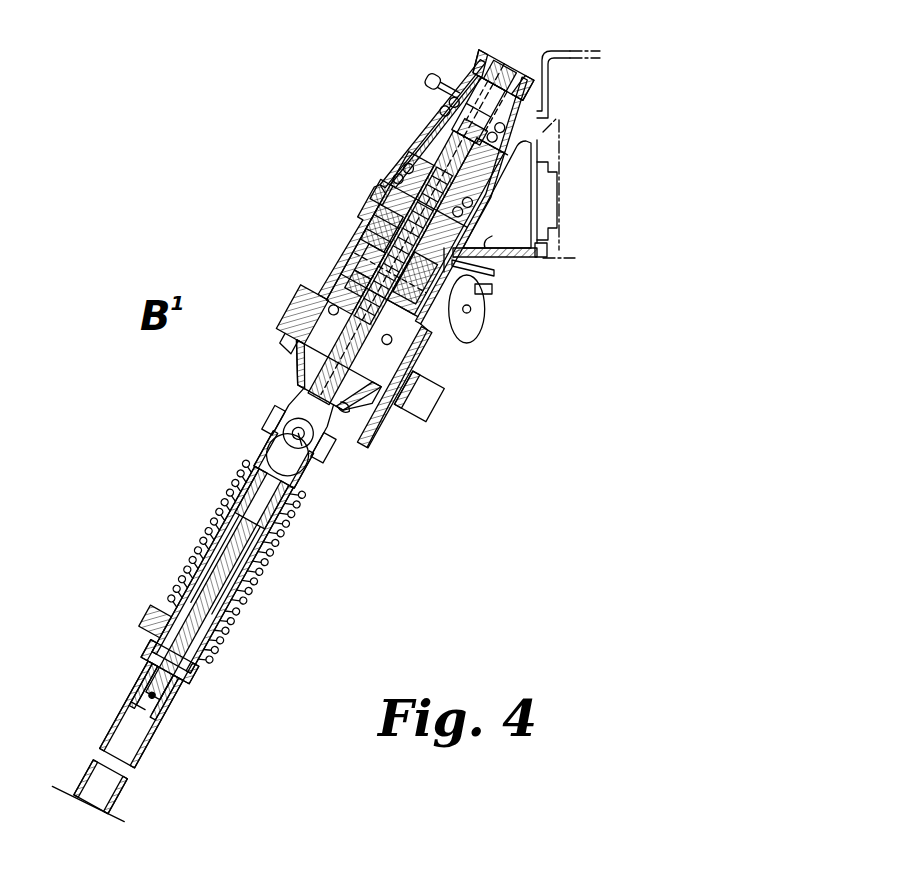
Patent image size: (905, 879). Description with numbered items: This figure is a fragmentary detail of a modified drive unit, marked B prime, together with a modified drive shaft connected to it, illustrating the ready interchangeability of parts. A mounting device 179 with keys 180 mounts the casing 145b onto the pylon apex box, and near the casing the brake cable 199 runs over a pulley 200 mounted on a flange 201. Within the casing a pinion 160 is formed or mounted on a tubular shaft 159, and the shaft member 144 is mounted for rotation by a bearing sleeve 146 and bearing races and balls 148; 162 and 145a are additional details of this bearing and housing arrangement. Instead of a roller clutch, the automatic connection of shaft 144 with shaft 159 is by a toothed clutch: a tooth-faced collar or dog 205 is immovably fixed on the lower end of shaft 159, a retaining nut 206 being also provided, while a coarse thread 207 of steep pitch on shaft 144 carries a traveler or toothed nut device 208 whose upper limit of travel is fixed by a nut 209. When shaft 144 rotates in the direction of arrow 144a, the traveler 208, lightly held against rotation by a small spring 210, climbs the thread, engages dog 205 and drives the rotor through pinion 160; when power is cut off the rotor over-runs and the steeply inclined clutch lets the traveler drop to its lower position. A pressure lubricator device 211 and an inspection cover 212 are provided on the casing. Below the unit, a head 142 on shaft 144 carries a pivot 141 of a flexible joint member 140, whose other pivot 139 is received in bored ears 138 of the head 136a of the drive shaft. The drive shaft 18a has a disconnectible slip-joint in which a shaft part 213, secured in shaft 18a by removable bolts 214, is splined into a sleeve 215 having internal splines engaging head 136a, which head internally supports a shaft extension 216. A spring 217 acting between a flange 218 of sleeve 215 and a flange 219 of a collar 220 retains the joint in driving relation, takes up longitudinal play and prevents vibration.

The pinion 160 is at (497, 60).
The pressure lubricator device 211 is at (440, 84).
The ball bearings 162 is at (438, 98).
The casing 145b is at (440, 115).
The tubular shaft 159 is at (438, 132).
The bearing sleeve 146 is at (440, 150).
The tooth-faced collar or dog 205 is at (400, 196).
The retaining nut 206 is at (388, 218).
The inspection cover 212 is at (392, 232).
The nut 209 is at (383, 247).
The traveler or toothed nut device 208 is at (380, 258).
The coarse thread of steep pitch 207 is at (338, 270).
The small spring 210 is at (362, 285).
The bearing races and balls 148 is at (346, 302).
The flange 145a is at (288, 318).
The shaft member 144 is at (312, 358).
The arrow 144a is at (346, 408).
The head 142 is at (302, 394).
The pivot 139 is at (262, 431).
The flexible joint member 140 is at (292, 452).
The pivot 141 is at (313, 458).
The ears 138 is at (308, 472).
The flange 218 is at (306, 497).
The head 136a is at (272, 527).
The sleeve 215 is at (242, 492).
The spring 217 is at (208, 537).
The shaft extension 216 is at (268, 562).
The flange 219 is at (212, 662).
The shaft part 213 is at (202, 636).
The collar 220 is at (150, 627).
The removable bolts 214 is at (162, 680).
The drive-shaft 18a is at (122, 716).
The mounting device 179 is at (495, 199).
The keys 180 is at (548, 192).
The flange 201 is at (483, 268).
The cable 199 is at (481, 292).
The pulley 200 is at (486, 332).